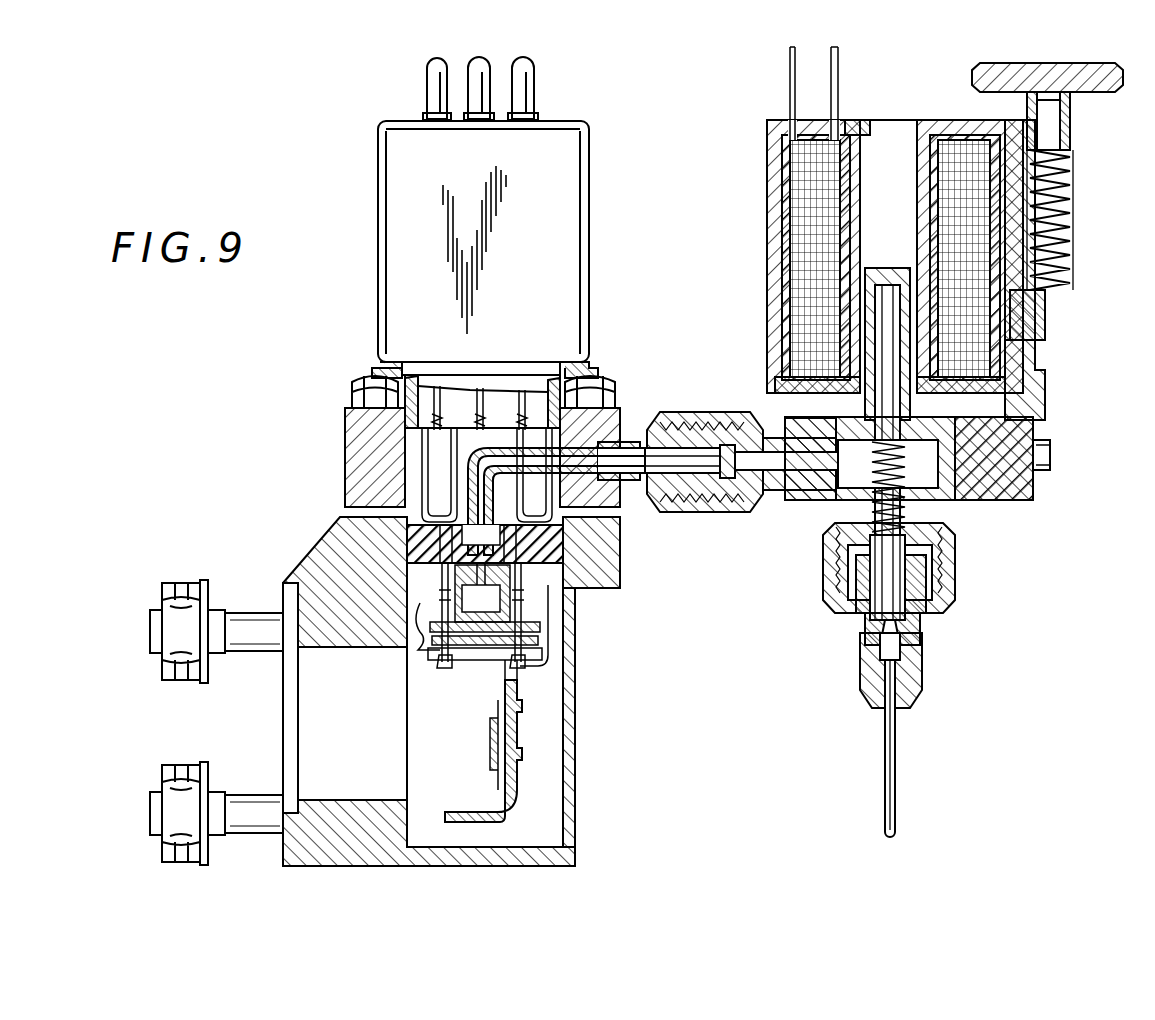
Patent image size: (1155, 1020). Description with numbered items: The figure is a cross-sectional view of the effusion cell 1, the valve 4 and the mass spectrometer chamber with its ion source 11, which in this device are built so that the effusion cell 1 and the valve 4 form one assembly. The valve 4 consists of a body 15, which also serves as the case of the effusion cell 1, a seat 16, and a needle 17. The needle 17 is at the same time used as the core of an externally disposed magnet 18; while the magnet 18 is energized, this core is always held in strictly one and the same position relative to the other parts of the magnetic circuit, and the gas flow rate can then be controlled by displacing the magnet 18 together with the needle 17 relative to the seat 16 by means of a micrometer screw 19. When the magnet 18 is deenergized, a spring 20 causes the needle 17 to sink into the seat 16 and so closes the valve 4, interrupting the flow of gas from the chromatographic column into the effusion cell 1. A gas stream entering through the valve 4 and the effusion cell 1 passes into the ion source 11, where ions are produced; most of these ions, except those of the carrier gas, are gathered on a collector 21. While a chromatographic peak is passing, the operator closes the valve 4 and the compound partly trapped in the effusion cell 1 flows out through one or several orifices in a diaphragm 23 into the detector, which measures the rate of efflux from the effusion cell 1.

The effusion cell 1 is at (932, 474).
The valve 4 is at (770, 162).
The ion source 11 is at (552, 531).
The body 15 is at (801, 492).
The seat 16 is at (906, 646).
The needle 17 is at (897, 550).
The magnet 18 is at (861, 122).
The micrometer screw 19 is at (1073, 163).
The spring 20 is at (888, 486).
The collector 21 is at (460, 810).
The diaphragm 23 is at (718, 482).